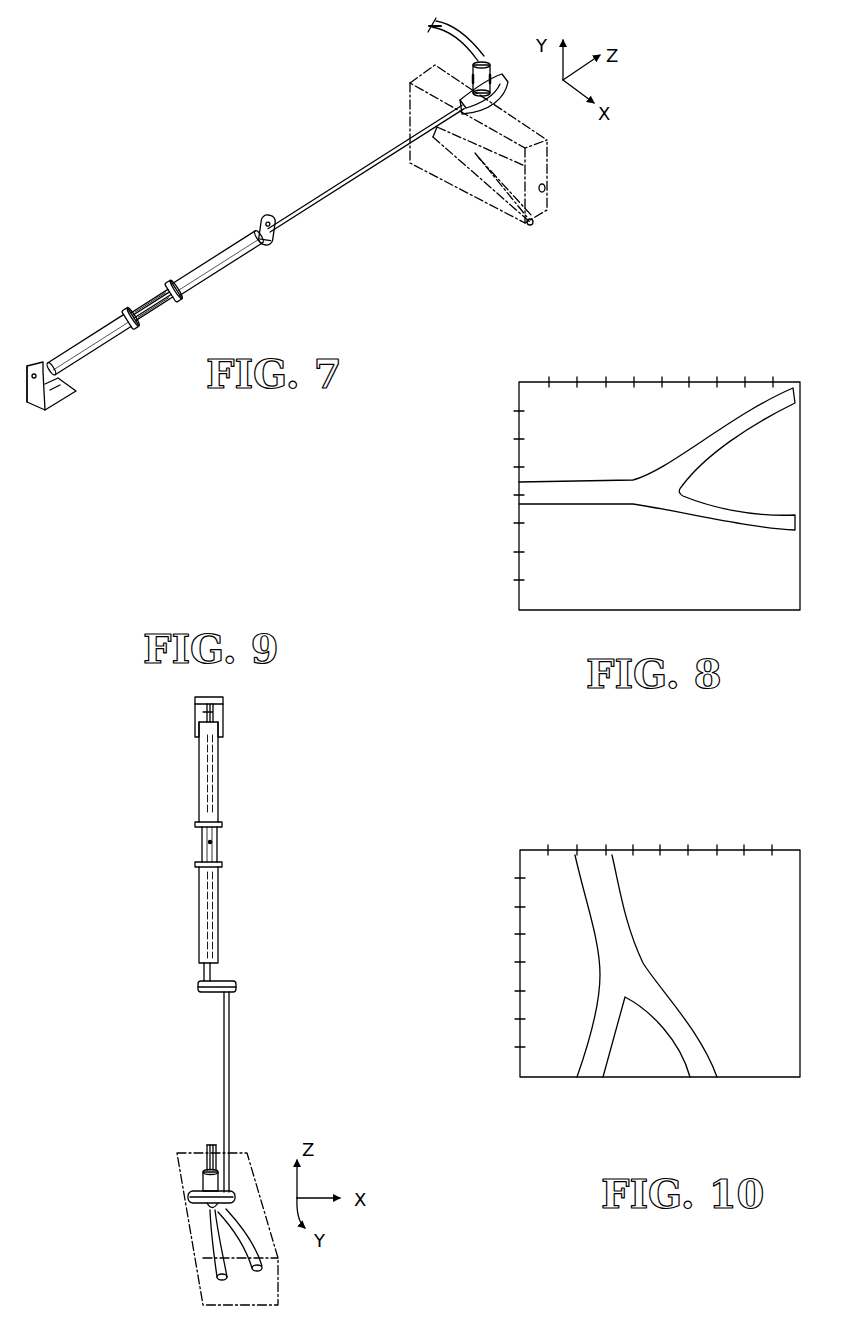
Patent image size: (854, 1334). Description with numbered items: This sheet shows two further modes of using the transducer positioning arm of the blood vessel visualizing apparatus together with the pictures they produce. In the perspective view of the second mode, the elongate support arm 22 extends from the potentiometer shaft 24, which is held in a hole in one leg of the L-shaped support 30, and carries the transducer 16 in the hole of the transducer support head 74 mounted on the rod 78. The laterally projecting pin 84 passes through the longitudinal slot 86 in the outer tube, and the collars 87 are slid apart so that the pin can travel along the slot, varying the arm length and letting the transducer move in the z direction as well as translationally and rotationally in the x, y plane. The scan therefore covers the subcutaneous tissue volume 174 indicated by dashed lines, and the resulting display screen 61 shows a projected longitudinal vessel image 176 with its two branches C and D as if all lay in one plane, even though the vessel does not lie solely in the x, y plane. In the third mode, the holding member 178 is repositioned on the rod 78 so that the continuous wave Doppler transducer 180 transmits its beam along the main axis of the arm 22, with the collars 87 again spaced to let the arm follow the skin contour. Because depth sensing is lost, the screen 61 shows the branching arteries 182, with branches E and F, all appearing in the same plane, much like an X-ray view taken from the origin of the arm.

In FIG. 7, the transducer 16 is at (486, 70).
In FIG. 7, the elongate support arm 22 is at (70, 338).
In FIG. 9, the elongate support arm 22 is at (232, 933).
In FIG. 9, the potentiometer shaft 24 is at (213, 713).
In FIG. 7, the L-shaped support 30 is at (58, 405).
In FIG. 8, the display screen 61 is at (541, 402).
In FIG. 10, the display screen 61 is at (712, 878).
In FIG. 7, the transducer support head 74 is at (507, 97).
In FIG. 7, the rod 78 is at (334, 186).
In FIG. 9, the rod 78 is at (230, 1067).
In FIG. 7, the laterally projecting pin 84 is at (146, 302).
In FIG. 9, the laterally projecting pin 84 is at (217, 850).
In FIG. 7, the longitudinal slot 86 is at (173, 300).
In FIG. 9, the longitudinal slot 86 is at (217, 840).
In FIG. 7, the collars 87 is at (122, 310).
In FIG. 9, the collars 87 is at (222, 824).
In FIG. 7, the subcutaneous tissue volume 174 is at (545, 218).
In FIG. 7, the branched channel 176 is at (442, 135).
In FIG. 8, the branched channel 176 is at (574, 493).
In FIG. 9, the holding member 178 is at (197, 1199).
In FIG. 9, the continuous wave Doppler transducer 180 is at (203, 1183).
In FIG. 10, the branching arteries 182 is at (613, 910).
In FIG. 9, the branching arteries 182 is at (197, 1166).
In FIG. 7, the branch C is at (545, 168).
In FIG. 8, the branch C is at (728, 418).
In FIG. 7, the branch D is at (503, 205).
In FIG. 8, the branch D is at (772, 528).
In FIG. 10, the branch E is at (593, 1063).
In FIG. 10, the branch F is at (700, 1067).